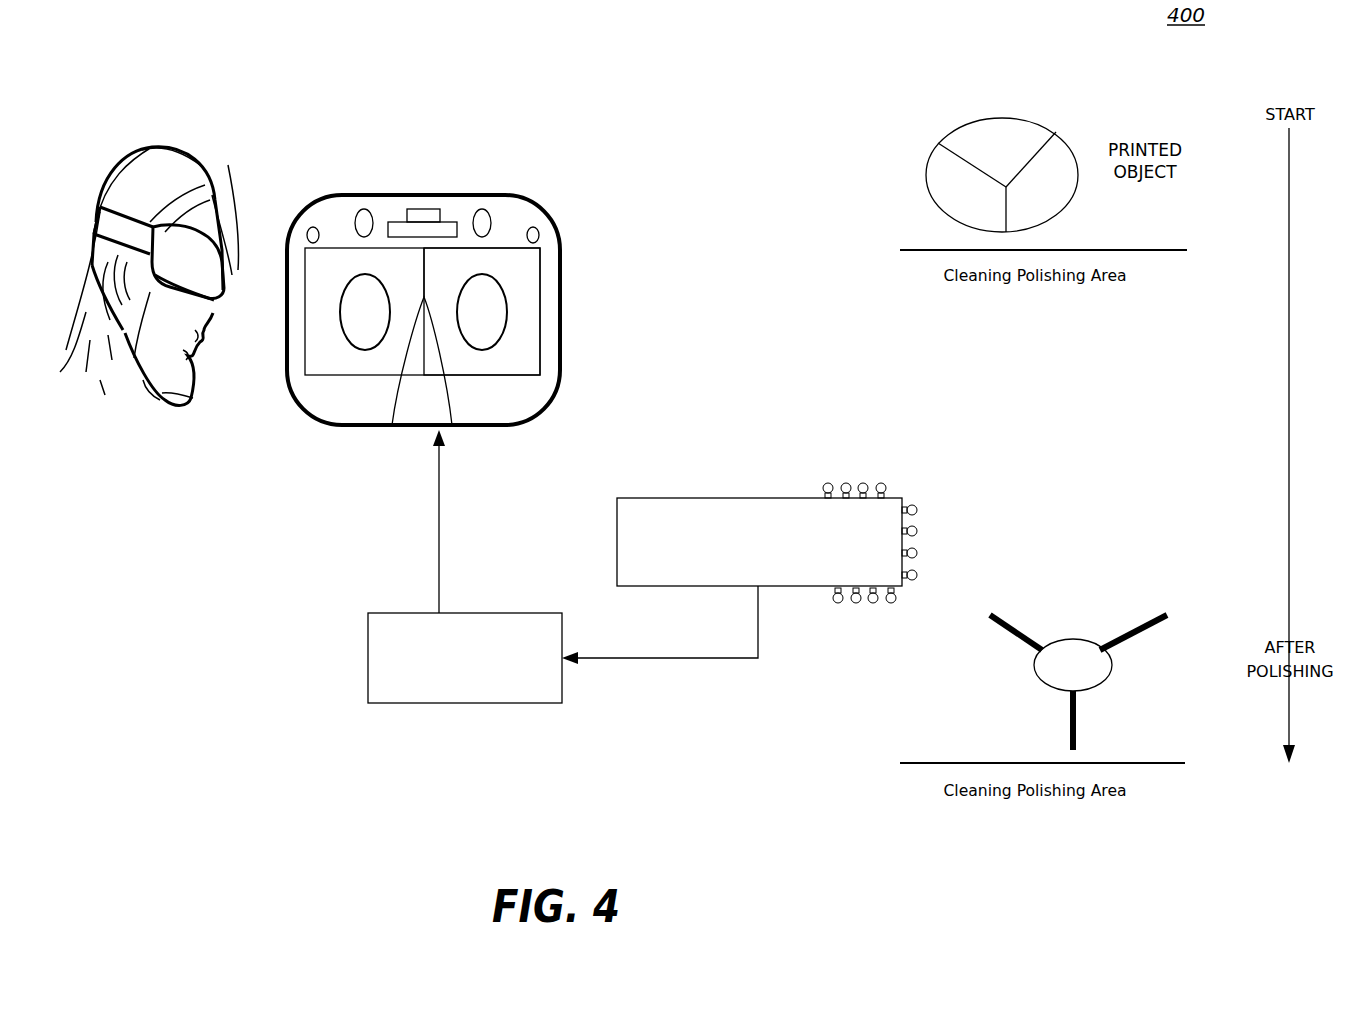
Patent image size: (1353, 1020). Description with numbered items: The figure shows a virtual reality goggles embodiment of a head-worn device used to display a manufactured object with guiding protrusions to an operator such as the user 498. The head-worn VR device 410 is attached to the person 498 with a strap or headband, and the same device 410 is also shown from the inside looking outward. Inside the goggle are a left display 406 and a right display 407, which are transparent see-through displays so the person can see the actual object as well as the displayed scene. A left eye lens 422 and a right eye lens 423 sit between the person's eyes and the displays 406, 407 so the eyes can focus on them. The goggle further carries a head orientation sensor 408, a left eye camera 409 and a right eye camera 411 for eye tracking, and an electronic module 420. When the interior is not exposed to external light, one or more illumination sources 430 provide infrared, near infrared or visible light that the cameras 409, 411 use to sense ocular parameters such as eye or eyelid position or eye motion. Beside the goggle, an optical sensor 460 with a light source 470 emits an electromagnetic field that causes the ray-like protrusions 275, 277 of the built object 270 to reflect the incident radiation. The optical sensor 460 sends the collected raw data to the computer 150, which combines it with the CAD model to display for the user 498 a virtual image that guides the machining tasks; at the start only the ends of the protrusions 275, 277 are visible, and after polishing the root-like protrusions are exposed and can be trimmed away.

The user 498 is at (145, 150).
The head-worn VR device 410 is at (204, 257).
The left display 406 is at (352, 377).
The right display 407 is at (475, 377).
The left eye lens 422 is at (347, 344).
The right eye lens 423 is at (500, 344).
The left eye camera 409 is at (357, 196).
The right eye camera 411 is at (487, 196).
The head orientation sensor 408 is at (425, 207).
The electronic module 420 is at (395, 221).
The illumination source 430 is at (312, 226).
The computer 150 is at (368, 656).
The optical sensor 460 is at (720, 506).
The light source 470 is at (846, 492).
The built object 270 is at (929, 186).
The ray-like protrusion 275 is at (938, 143).
The ray-like protrusion 277 is at (1056, 132).